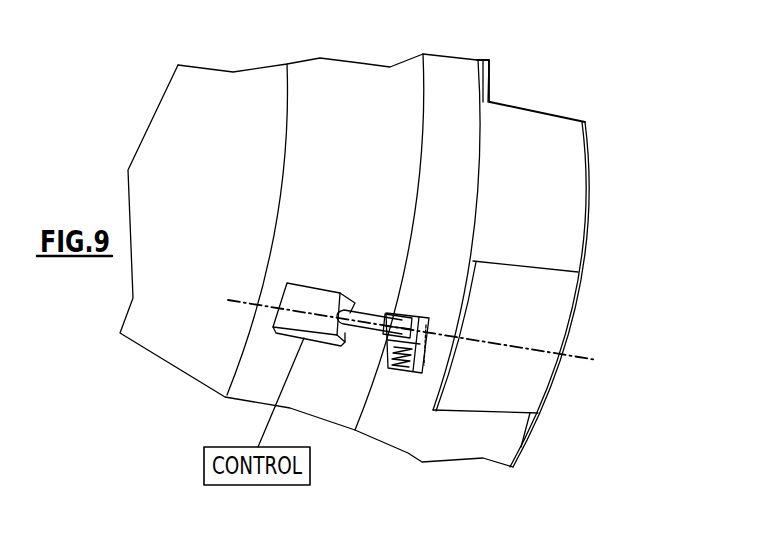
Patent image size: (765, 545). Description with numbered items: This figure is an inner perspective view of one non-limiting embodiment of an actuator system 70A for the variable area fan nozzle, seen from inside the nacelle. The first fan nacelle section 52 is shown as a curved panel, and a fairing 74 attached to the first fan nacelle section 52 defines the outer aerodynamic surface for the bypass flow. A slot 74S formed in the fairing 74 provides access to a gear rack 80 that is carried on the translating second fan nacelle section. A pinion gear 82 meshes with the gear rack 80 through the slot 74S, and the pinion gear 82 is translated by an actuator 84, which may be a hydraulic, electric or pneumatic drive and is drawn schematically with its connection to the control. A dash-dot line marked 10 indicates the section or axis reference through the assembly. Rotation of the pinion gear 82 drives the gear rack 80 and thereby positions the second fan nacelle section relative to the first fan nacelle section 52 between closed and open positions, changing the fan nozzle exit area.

The axis / section line 10 is at (228, 300).
The first fan nacelle section 52 is at (566, 182).
The actuator system 70A is at (355, 222).
The fairing 74 is at (460, 140).
The slot 74S is at (447, 360).
The gear rack 80 is at (398, 371).
The pinion gear 82 is at (410, 316).
The actuator 84 is at (312, 298).